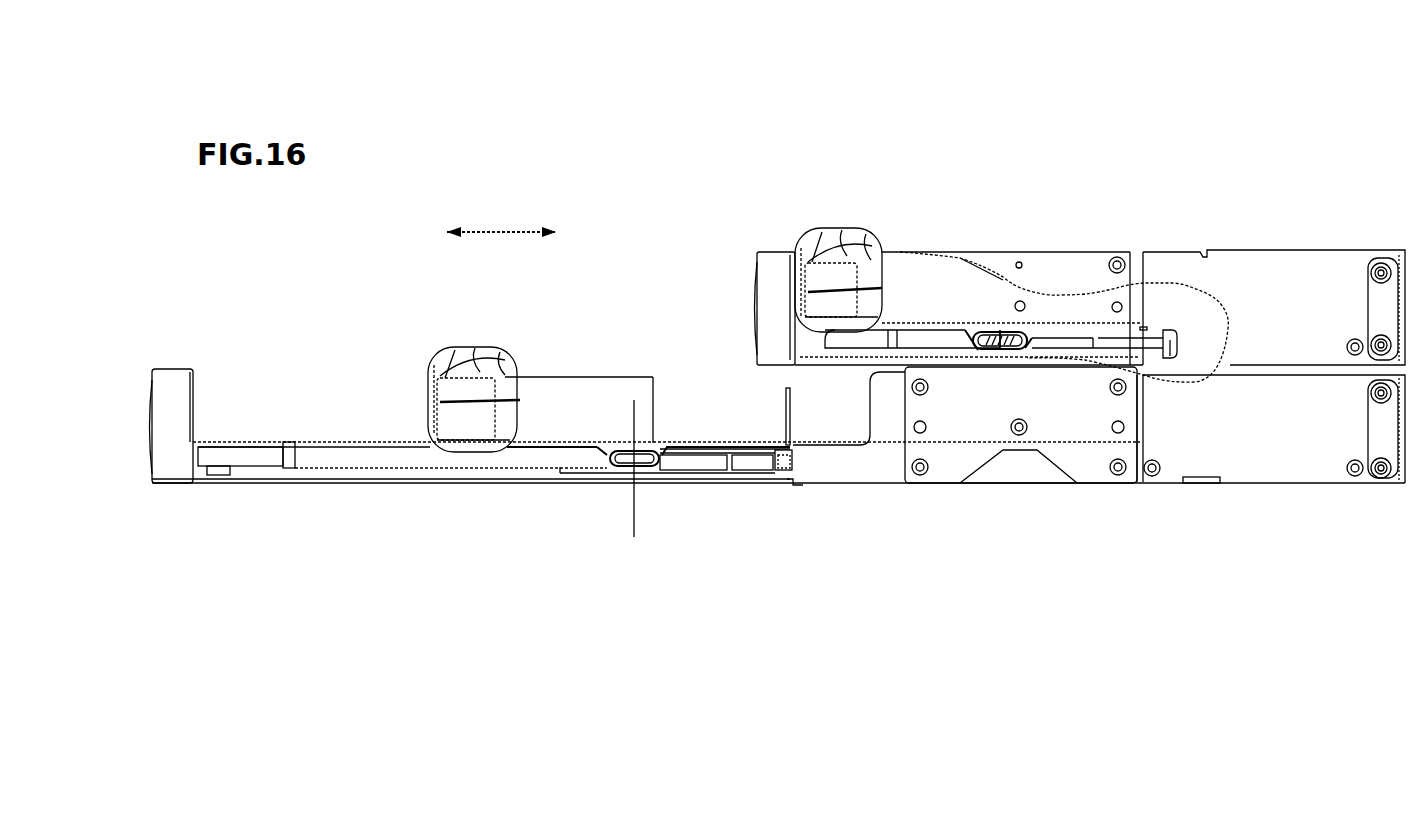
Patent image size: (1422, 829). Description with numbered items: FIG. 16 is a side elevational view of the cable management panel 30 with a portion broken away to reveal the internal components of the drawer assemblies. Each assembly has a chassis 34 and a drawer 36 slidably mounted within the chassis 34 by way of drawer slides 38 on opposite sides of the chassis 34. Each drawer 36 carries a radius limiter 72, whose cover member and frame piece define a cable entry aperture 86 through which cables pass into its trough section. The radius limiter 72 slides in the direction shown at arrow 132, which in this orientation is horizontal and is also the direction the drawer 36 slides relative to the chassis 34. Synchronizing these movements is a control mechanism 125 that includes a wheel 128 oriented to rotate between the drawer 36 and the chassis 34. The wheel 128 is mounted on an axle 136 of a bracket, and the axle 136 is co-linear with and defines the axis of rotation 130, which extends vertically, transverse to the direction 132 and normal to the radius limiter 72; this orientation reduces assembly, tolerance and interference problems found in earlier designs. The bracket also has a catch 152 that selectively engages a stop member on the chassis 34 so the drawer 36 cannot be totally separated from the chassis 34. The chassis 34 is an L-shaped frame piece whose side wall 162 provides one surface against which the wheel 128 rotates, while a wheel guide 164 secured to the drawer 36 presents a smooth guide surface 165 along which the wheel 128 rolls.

The cable management panel 30 is at (972, 137).
The chassis 34 is at (1322, 260).
The drawer 36 is at (243, 443).
The drawer slide 38 is at (790, 495).
The radius limiter 72 is at (535, 350).
The cable entry aperture 86 is at (520, 400).
The control mechanism 125 is at (672, 420).
The wheel 128 is at (648, 462).
The axis of rotation 130 is at (633, 512).
The direction of slidable movement 132 is at (497, 230).
The axle 136 is at (1016, 350).
The catch 152 is at (1170, 358).
The side wall 162 is at (1094, 291).
The wheel guide 164 is at (922, 340).
The guide surface 165 is at (956, 344).